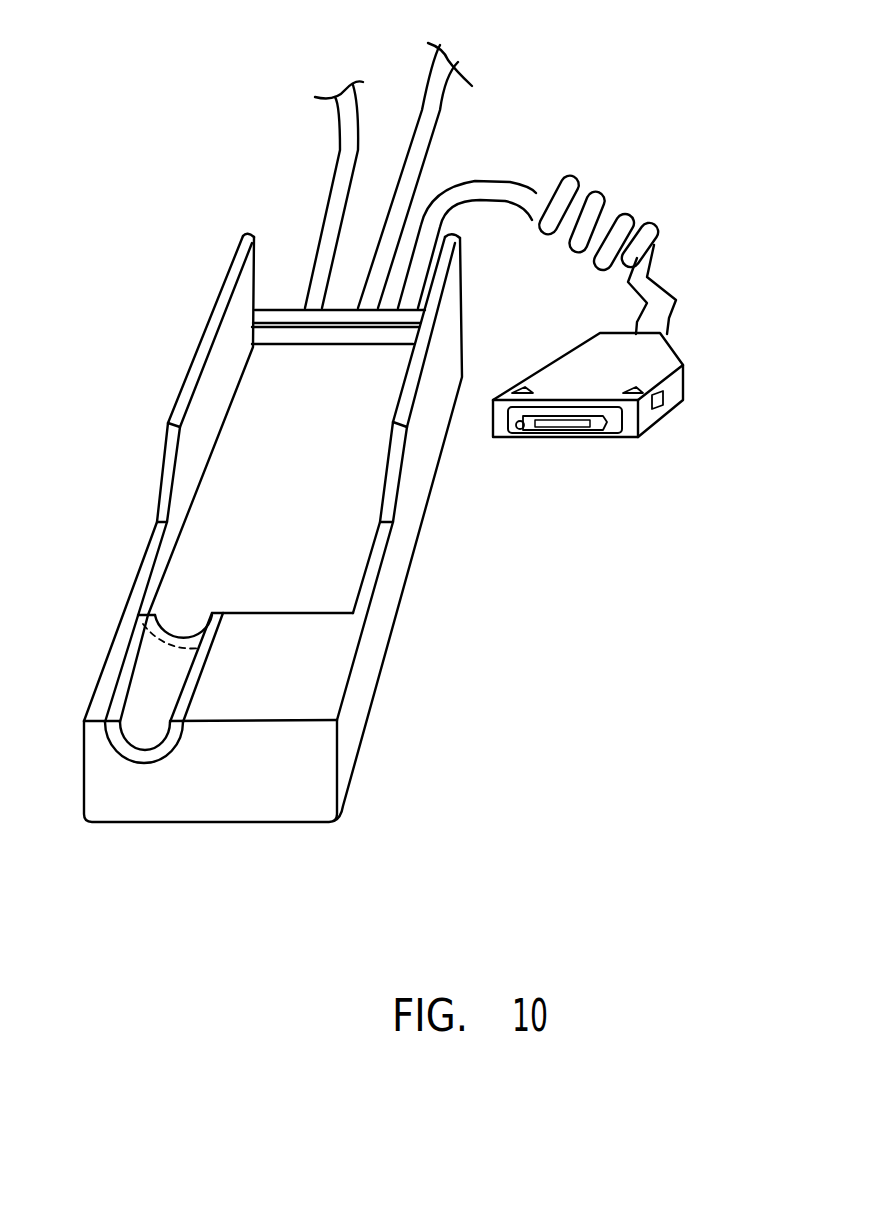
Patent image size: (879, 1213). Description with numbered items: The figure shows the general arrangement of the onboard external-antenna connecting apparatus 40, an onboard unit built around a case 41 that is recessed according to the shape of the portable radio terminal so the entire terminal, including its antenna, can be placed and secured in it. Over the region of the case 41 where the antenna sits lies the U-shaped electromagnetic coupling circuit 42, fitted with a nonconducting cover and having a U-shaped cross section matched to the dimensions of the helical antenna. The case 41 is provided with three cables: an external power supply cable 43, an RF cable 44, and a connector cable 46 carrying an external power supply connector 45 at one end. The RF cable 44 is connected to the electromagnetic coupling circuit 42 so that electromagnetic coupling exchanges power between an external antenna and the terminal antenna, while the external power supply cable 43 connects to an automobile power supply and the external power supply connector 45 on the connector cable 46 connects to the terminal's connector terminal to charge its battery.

The onboard external-antenna connecting apparatus 40 is at (557, 667).
The case 41 is at (410, 535).
The electromagnetic coupling circuit 42 is at (143, 682).
The external power supply cable 43 is at (347, 145).
The RF cable 44 is at (423, 108).
The external power supply connector 45 is at (663, 358).
The connector cable 46 is at (643, 237).